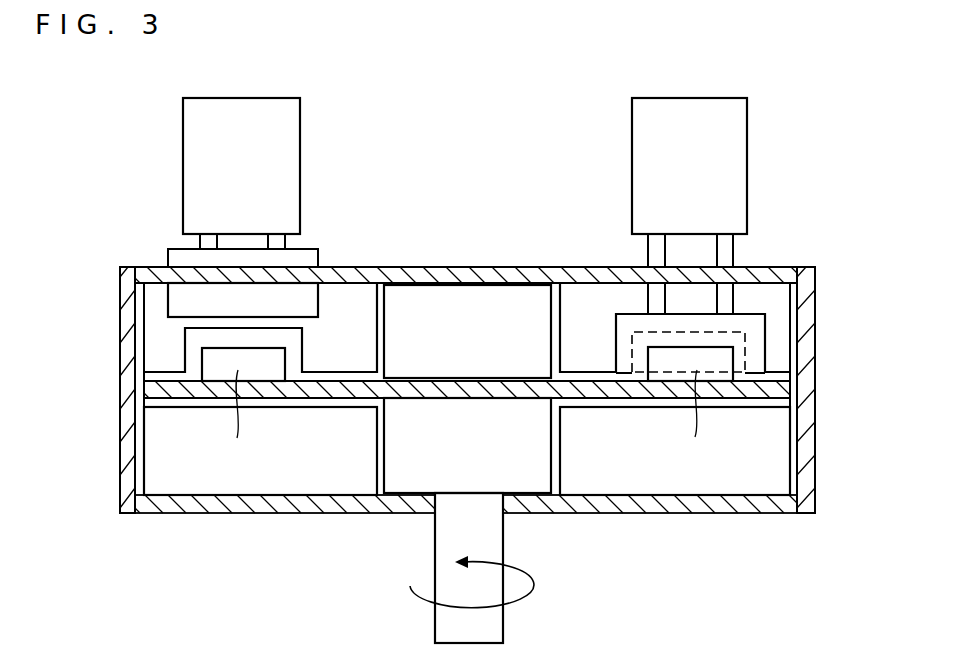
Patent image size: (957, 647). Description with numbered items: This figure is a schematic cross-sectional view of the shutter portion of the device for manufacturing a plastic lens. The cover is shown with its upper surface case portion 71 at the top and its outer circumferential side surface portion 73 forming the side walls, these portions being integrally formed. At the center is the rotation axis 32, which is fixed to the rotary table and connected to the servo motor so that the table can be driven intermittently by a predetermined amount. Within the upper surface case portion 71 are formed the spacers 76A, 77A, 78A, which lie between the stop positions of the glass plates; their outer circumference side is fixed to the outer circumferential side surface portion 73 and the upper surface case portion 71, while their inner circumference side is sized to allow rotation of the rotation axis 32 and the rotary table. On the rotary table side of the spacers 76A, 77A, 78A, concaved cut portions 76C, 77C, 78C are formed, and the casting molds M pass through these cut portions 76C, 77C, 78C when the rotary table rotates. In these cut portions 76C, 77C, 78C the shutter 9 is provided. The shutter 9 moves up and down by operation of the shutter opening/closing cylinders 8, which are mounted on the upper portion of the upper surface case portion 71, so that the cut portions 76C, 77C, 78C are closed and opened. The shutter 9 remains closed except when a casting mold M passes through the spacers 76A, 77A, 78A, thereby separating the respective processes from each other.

The shutter opening/closing cylinder 8 is at (640, 125).
The shutter 9 is at (178, 300).
The upper surface case portion 71 is at (163, 270).
The outer circumferential side surface portion 73 is at (812, 362).
The rotation axis 32 is at (502, 623).
The spacer 76A is at (467, 270).
The spacer 77A is at (467, 270).
The spacer 78A is at (588, 348).
The concaved cut portion 76C is at (467, 461).
The concaved cut portion 77C is at (467, 461).
The concaved cut portion 78C is at (295, 370).